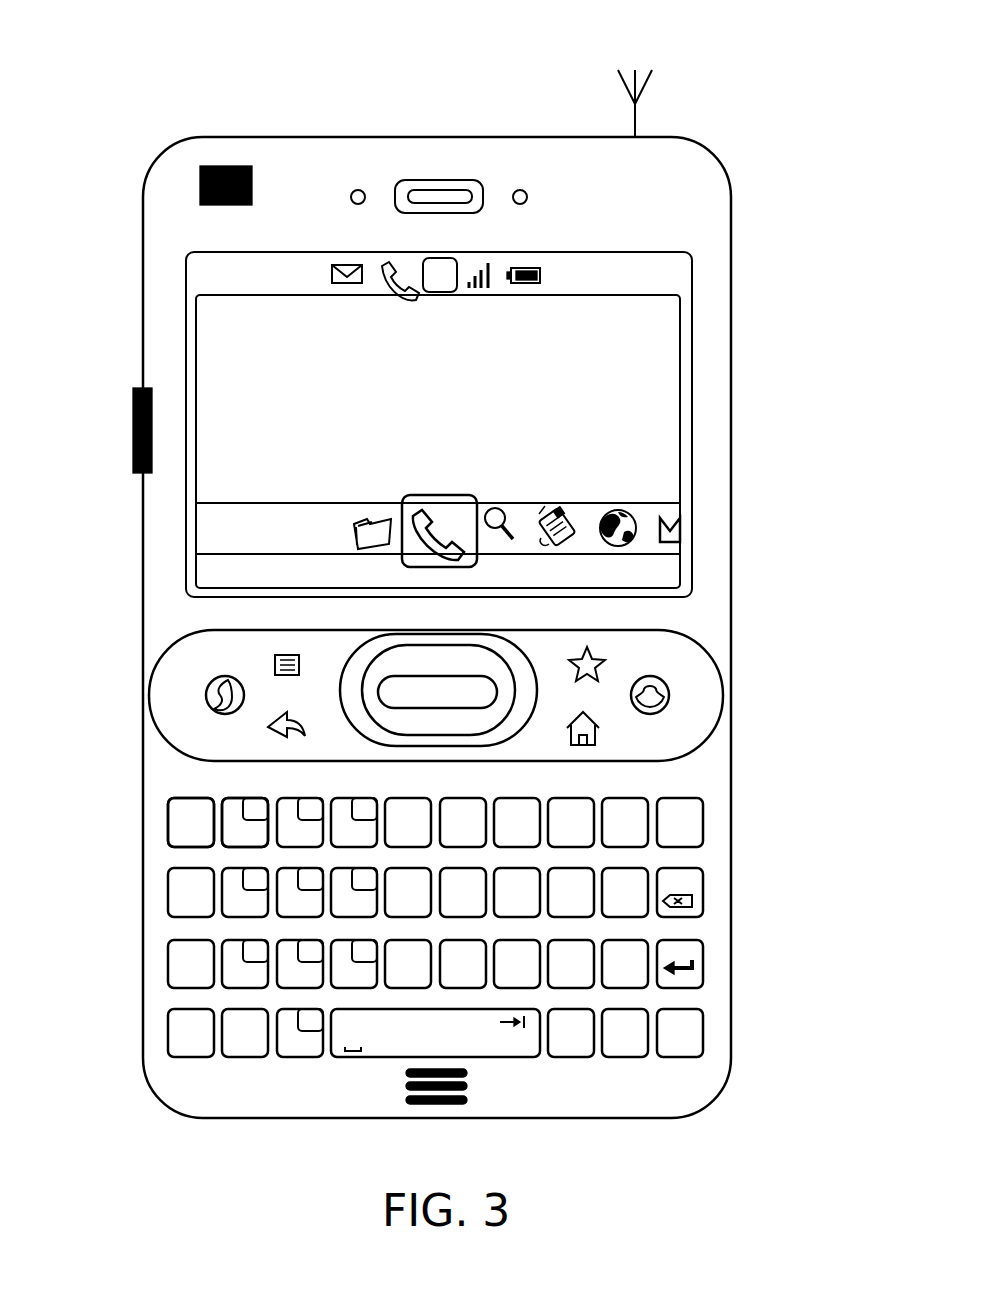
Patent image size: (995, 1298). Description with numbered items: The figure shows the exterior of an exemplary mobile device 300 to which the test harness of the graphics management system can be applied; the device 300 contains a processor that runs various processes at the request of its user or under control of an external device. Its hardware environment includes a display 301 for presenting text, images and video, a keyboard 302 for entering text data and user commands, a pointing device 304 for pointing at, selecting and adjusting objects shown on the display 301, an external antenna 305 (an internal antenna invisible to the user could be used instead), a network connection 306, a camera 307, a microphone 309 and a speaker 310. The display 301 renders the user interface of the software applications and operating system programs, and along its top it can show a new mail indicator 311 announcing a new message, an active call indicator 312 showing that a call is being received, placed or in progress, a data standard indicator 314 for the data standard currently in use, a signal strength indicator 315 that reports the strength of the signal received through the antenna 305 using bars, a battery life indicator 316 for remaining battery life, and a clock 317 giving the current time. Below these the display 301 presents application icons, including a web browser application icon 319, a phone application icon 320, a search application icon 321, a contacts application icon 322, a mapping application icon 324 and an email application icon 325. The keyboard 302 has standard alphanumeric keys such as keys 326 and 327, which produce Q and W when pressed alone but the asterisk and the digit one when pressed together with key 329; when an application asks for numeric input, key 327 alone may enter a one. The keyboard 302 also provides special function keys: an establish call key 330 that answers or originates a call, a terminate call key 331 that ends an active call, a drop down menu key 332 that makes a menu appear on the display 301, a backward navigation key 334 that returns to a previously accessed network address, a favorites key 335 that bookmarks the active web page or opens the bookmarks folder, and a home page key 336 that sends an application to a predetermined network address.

The device 300 is at (90, 58).
The display 301 is at (233, 348).
The keyboard 302 is at (672, 1082).
The pointing device 304 is at (450, 685).
The antenna 305 is at (630, 125).
The network connection 306 is at (133, 434).
The camera 307 is at (252, 190).
The microphone 309 is at (450, 1102).
The speaker 310 is at (430, 154).
The new mail indicator 311 is at (332, 272).
The active call indicator 312 is at (383, 271).
The data standard indicator 314 is at (416, 265).
The signal strength indicator 315 is at (481, 276).
The battery life indicator 316 is at (524, 268).
The clock 317 is at (614, 277).
The web browser application icon 319 is at (354, 519).
The phone application icon 320 is at (416, 495).
The search application icon 321 is at (497, 507).
The contacts application icon 322 is at (556, 504).
The mapping application icon 324 is at (618, 508).
The email application icon 325 is at (668, 516).
The key 326 is at (176, 812).
The key 327 is at (248, 810).
The key 329 is at (703, 1052).
The establish call key 330 is at (212, 685).
The terminate call key 331 is at (664, 685).
The drop down menu key 332 is at (285, 655).
The backward navigation key 334 is at (267, 727).
The favorites key 335 is at (591, 652).
The home page key 336 is at (599, 727).